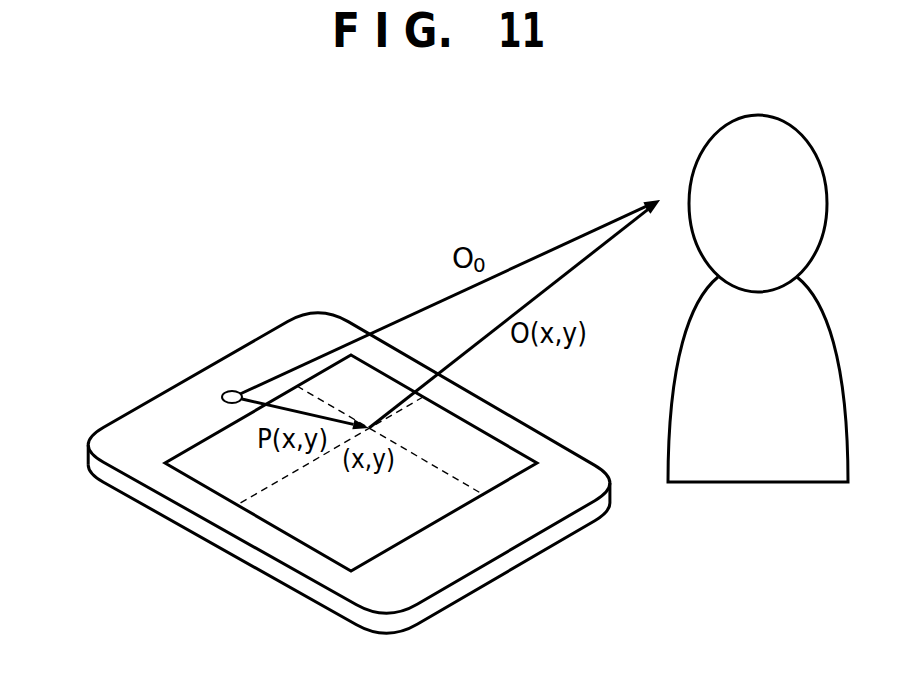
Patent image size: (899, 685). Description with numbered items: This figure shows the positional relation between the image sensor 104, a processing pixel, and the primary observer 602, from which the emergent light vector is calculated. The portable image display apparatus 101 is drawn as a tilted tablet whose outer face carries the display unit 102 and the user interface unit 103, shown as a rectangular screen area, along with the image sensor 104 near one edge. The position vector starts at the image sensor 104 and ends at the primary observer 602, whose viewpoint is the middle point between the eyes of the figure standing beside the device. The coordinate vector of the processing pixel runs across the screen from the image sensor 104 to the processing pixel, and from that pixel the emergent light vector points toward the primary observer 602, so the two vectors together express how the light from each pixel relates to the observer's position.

The image display apparatus 101 is at (563, 472).
The display unit 102 is at (351, 502).
The user interface unit 103 is at (326, 540).
The image sensor 104 is at (222, 397).
The primary observer 602 is at (722, 125).